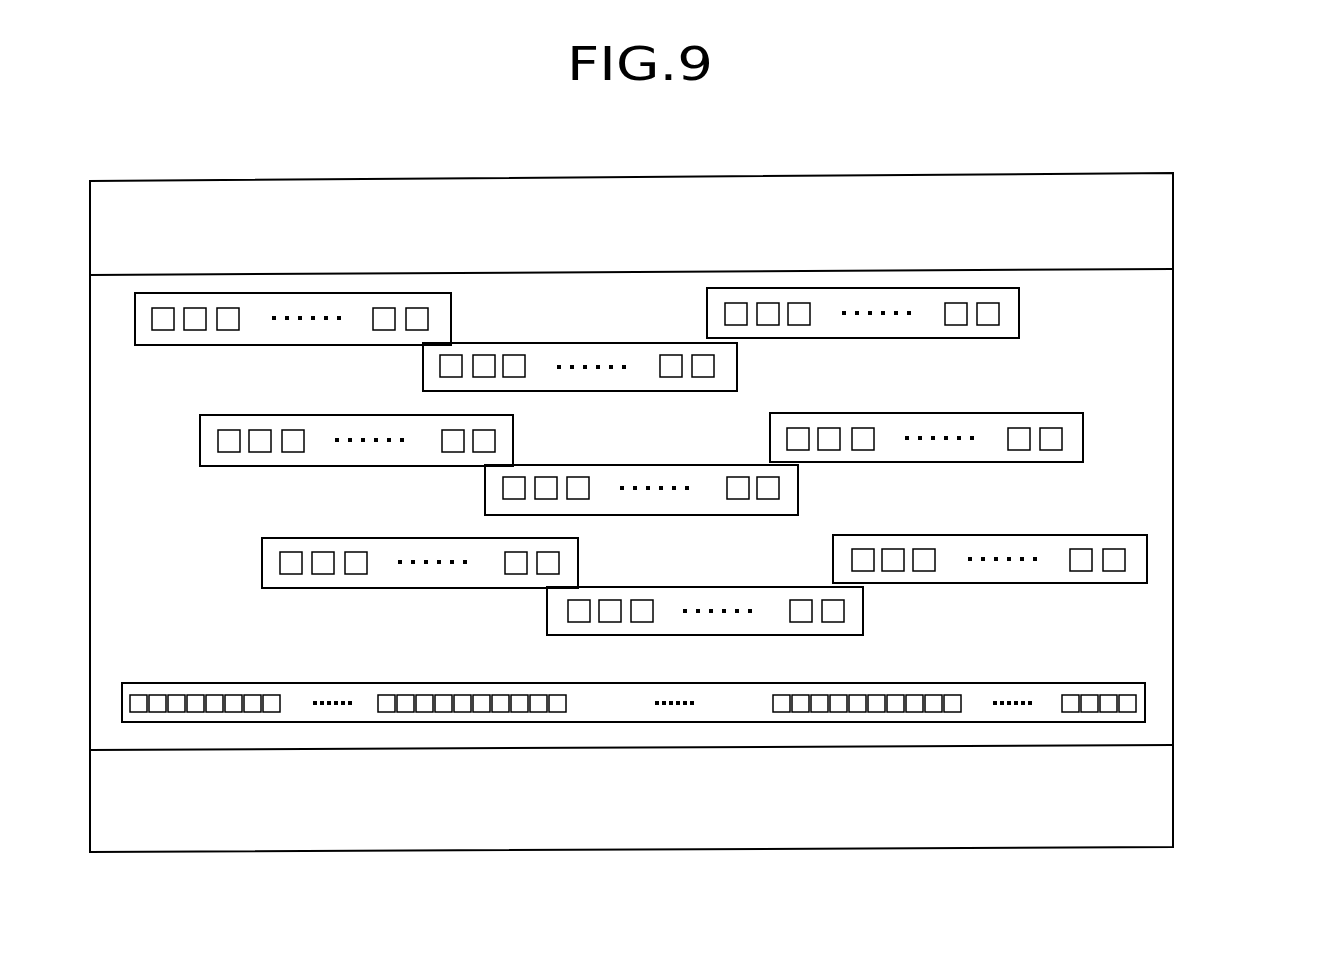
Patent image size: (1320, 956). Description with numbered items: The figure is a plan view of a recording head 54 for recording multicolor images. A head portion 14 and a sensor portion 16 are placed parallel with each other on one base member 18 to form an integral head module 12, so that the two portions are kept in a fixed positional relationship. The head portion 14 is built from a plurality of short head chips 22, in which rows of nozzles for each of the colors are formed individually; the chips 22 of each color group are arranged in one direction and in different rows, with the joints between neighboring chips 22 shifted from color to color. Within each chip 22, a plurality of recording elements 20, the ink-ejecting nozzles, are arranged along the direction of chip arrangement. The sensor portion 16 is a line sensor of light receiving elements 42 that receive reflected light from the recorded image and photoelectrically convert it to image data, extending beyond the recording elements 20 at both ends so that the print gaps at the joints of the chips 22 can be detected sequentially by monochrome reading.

The head module 12 is at (910, 751).
The head portion 14 is at (1200, 275).
The sensor portion 16 is at (1196, 711).
The base member 18 is at (718, 752).
The recording elements 20 is at (224, 312).
The short head chips 22 is at (205, 292).
The light receiving elements 42 is at (235, 700).
The recording head 54 is at (980, 134).